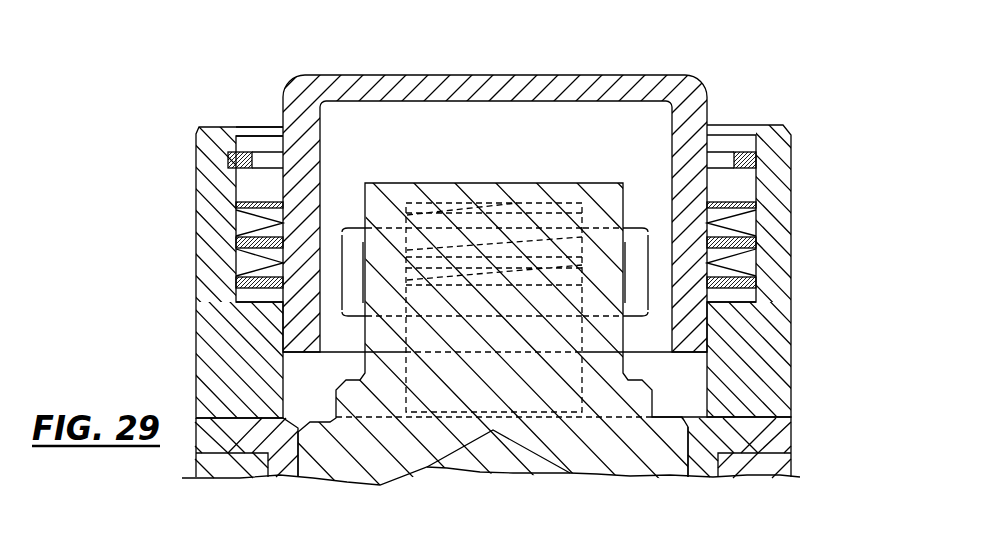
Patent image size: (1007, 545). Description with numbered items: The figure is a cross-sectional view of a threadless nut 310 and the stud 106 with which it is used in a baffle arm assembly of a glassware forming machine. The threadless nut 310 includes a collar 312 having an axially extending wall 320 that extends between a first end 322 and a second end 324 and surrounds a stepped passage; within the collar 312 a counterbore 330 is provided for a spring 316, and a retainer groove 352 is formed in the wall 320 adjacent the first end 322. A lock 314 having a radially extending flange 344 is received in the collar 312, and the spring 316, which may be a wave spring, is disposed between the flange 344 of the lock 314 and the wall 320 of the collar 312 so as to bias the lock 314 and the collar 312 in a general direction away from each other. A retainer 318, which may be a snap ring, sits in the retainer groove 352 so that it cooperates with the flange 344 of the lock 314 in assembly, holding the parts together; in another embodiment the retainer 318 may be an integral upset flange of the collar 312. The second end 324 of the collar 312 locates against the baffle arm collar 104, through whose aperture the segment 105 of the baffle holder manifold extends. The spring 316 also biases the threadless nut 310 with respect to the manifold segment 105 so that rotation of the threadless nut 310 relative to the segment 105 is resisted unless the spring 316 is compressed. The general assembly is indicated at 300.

The collar 104 is at (817, 471).
The segment 105 is at (593, 390).
The stud 106 is at (597, 192).
The actuator assembly 300 is at (492, 44).
The threadless nut 310 is at (186, 57).
The collar 312 is at (471, 464).
The lock 314 is at (732, 75).
The spring 316 is at (234, 222).
The retainer 318 is at (744, 132).
The axially extending wall 320 is at (263, 312).
The first end 322 is at (233, 137).
The second end 324 is at (773, 418).
The counterbore 330 is at (752, 225).
The flange 344 is at (250, 185).
The retainer groove 352 is at (252, 150).